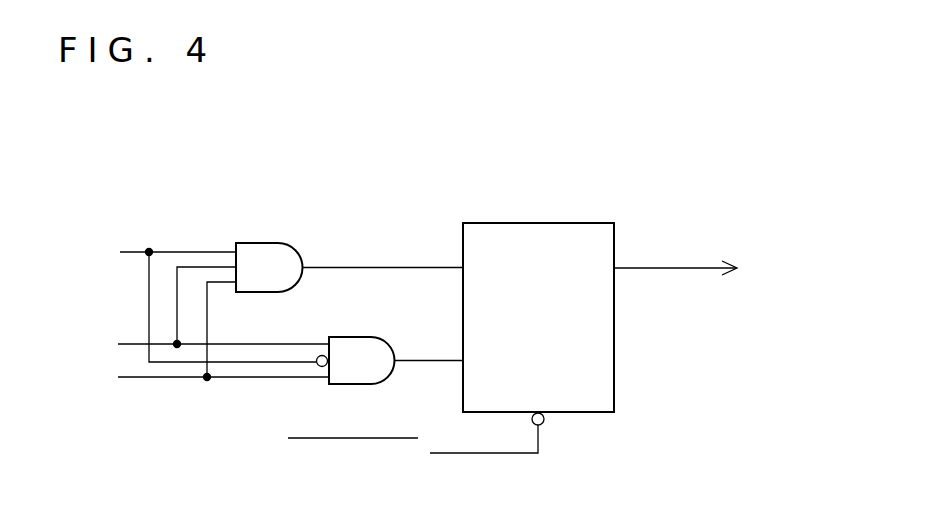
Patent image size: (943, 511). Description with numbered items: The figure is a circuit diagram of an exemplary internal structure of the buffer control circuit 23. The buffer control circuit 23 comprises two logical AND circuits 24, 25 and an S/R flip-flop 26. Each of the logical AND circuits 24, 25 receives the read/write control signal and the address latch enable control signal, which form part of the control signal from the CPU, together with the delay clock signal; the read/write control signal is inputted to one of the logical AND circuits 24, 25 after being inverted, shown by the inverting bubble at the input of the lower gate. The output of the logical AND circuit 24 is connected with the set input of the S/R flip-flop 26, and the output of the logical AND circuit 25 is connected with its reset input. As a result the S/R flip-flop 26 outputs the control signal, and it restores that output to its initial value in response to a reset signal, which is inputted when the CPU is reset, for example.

The buffer control circuit 23 is at (694, 340).
The logical AND circuit 24 is at (257, 242).
The logical AND circuit 25 is at (349, 336).
The S/R flip-flop 26 is at (538, 223).